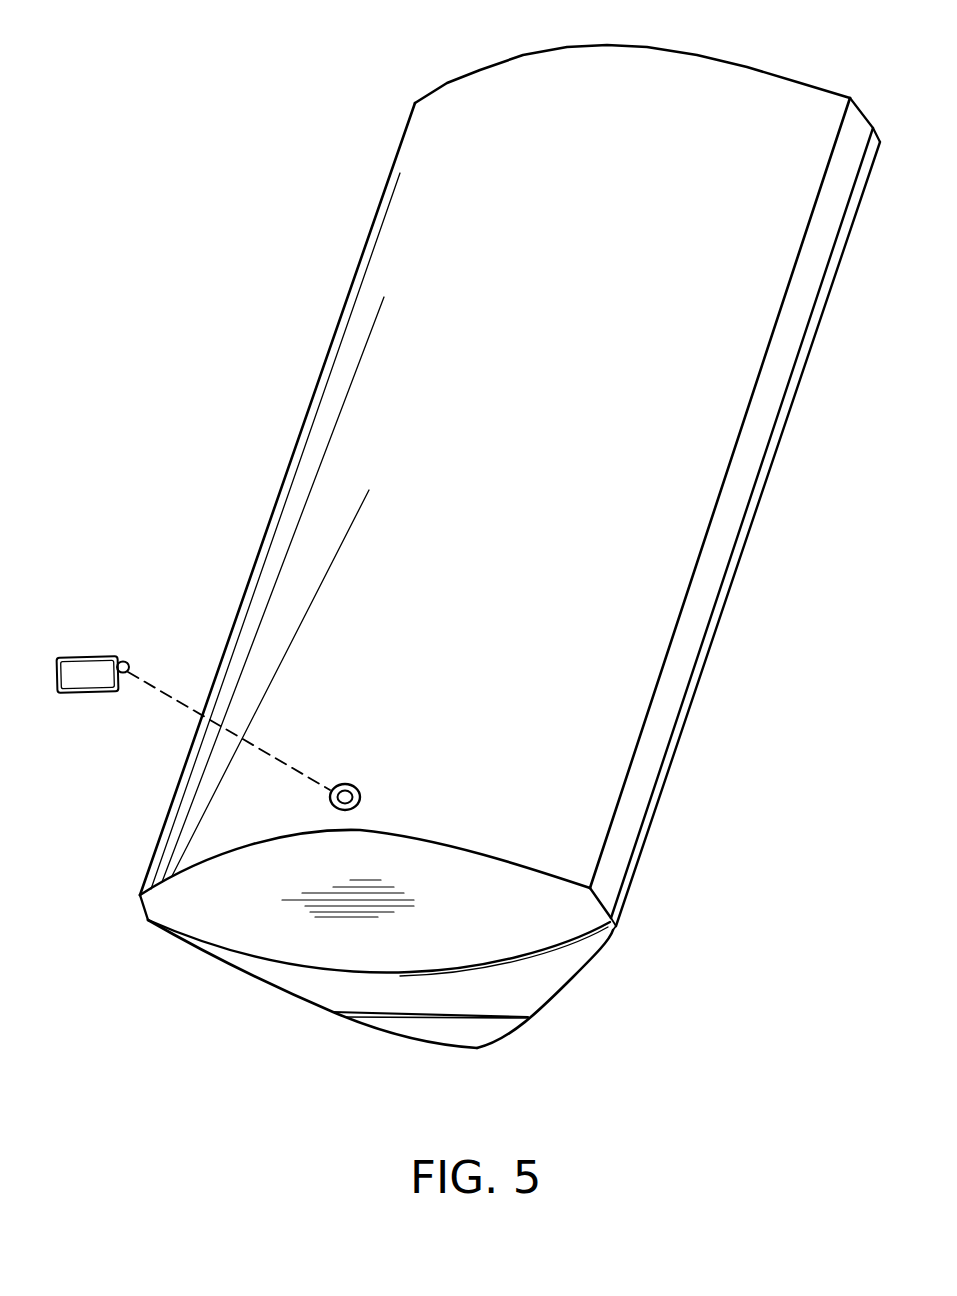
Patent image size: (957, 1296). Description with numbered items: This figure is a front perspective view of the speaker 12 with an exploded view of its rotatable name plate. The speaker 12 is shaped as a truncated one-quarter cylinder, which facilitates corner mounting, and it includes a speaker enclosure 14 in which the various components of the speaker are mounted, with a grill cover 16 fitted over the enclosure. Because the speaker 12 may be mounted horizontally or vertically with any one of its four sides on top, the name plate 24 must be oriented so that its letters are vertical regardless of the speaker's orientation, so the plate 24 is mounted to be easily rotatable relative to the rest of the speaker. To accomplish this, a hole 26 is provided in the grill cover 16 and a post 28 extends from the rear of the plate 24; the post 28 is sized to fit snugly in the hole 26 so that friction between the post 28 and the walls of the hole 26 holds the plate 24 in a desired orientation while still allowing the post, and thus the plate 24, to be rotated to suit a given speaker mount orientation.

The speaker 12 is at (318, 80).
The speaker enclosure 14 is at (563, 967).
The grill cover 16 is at (622, 698).
The name plate 24 is at (80, 657).
The hole 26 is at (361, 791).
The post 28 is at (128, 666).